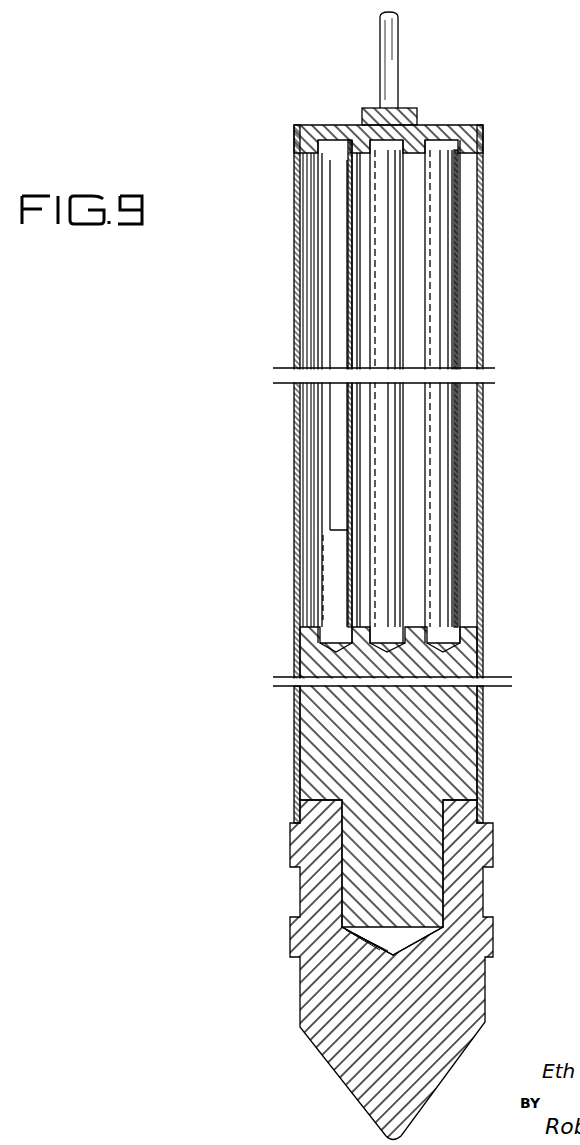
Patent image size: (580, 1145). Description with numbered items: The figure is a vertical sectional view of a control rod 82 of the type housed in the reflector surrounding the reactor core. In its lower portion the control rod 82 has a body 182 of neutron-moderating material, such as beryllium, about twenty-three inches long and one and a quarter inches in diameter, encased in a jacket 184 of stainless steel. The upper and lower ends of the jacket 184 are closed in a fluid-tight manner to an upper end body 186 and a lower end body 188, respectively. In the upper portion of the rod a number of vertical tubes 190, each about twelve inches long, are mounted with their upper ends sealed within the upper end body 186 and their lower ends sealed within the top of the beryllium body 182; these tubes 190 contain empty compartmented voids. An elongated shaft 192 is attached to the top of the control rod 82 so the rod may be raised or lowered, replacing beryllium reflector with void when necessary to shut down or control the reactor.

The control rod 82 is at (492, 471).
The body 182 is at (308, 718).
The jacket 184 is at (300, 776).
The upper end body 186 is at (440, 127).
The lower end body 188 is at (305, 985).
The vertical tubes 190 is at (396, 320).
The elongated shaft 192 is at (398, 80).